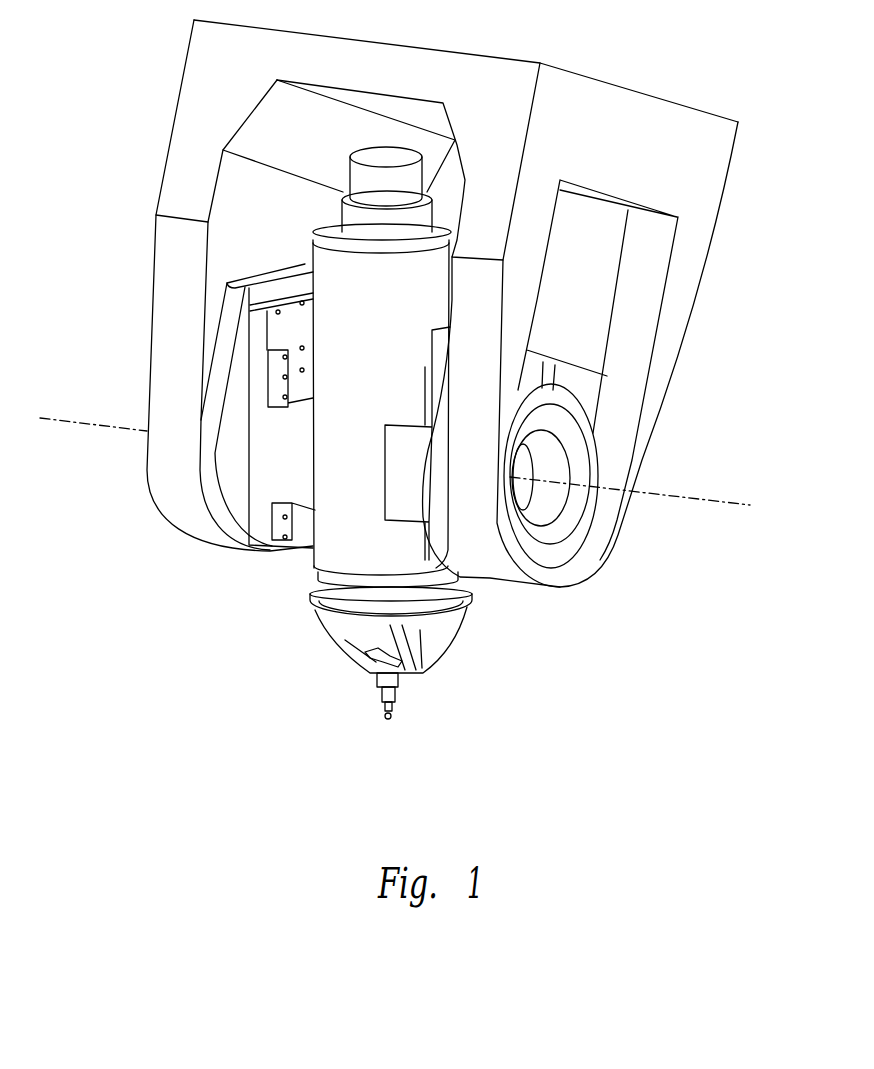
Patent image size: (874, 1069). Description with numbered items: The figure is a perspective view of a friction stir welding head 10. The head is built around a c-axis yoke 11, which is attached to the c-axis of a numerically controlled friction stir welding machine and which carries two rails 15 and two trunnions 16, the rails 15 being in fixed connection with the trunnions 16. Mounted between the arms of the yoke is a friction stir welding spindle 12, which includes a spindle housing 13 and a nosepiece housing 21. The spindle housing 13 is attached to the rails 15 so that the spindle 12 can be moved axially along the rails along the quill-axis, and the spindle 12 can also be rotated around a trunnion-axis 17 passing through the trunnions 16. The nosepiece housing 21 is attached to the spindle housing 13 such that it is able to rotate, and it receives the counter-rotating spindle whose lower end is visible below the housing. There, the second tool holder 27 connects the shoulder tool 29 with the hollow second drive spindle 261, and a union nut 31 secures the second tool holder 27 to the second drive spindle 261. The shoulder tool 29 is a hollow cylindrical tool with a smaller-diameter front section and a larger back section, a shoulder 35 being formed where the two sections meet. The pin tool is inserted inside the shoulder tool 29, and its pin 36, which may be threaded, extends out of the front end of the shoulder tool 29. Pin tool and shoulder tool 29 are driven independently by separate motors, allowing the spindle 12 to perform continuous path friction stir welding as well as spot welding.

The friction stir welding head 10 is at (416, 402).
The c-axis yoke 11 is at (633, 108).
The friction stir welding spindle 12 is at (330, 267).
The spindle housing 13 is at (310, 565).
The rails 15 is at (275, 364).
The trunnions 16 is at (237, 403).
The trunnion-axis 17 is at (712, 500).
The nosepiece housing 21 is at (327, 634).
The second drive spindle 261 is at (390, 653).
The union nut 31 is at (362, 656).
The second tool holder 27 is at (376, 682).
The shoulder tool 29 is at (378, 680).
The shoulder 35 is at (397, 697).
The pin 36 is at (393, 713).